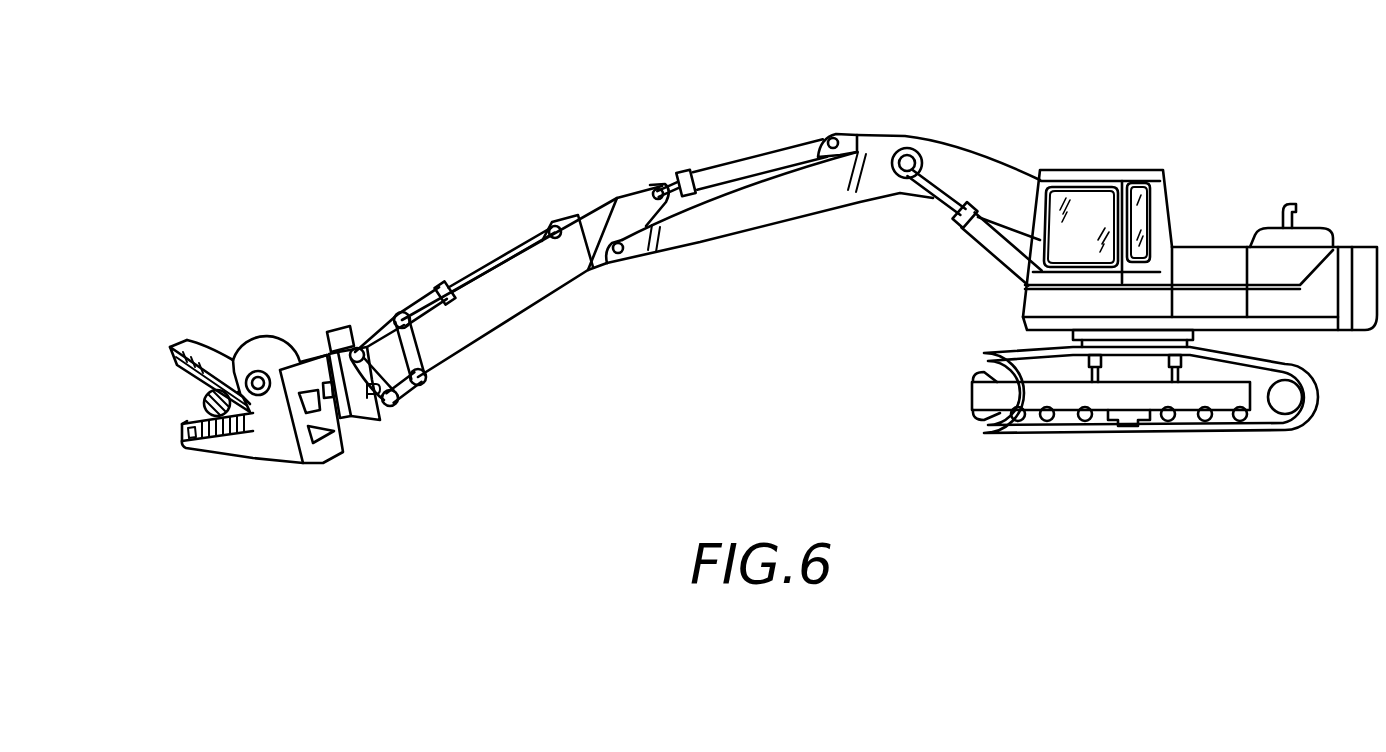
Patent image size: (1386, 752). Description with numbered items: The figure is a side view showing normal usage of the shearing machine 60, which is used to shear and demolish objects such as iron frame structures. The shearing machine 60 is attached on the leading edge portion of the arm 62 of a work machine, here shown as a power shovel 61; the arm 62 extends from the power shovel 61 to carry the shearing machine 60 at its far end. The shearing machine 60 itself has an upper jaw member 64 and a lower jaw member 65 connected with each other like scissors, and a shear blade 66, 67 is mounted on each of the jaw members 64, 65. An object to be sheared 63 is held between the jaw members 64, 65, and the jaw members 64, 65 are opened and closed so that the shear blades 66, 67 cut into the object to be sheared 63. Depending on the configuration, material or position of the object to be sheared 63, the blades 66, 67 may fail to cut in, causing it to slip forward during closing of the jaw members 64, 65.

The shearing machine 60 is at (288, 300).
The power shovel 61 is at (1180, 128).
The arm 62 is at (585, 243).
The object to be sheared 63 is at (207, 443).
The upper jaw member 64 is at (203, 348).
The lower jaw member 65 is at (280, 447).
The shear blade 66 is at (192, 383).
The shear blade 67 is at (187, 417).